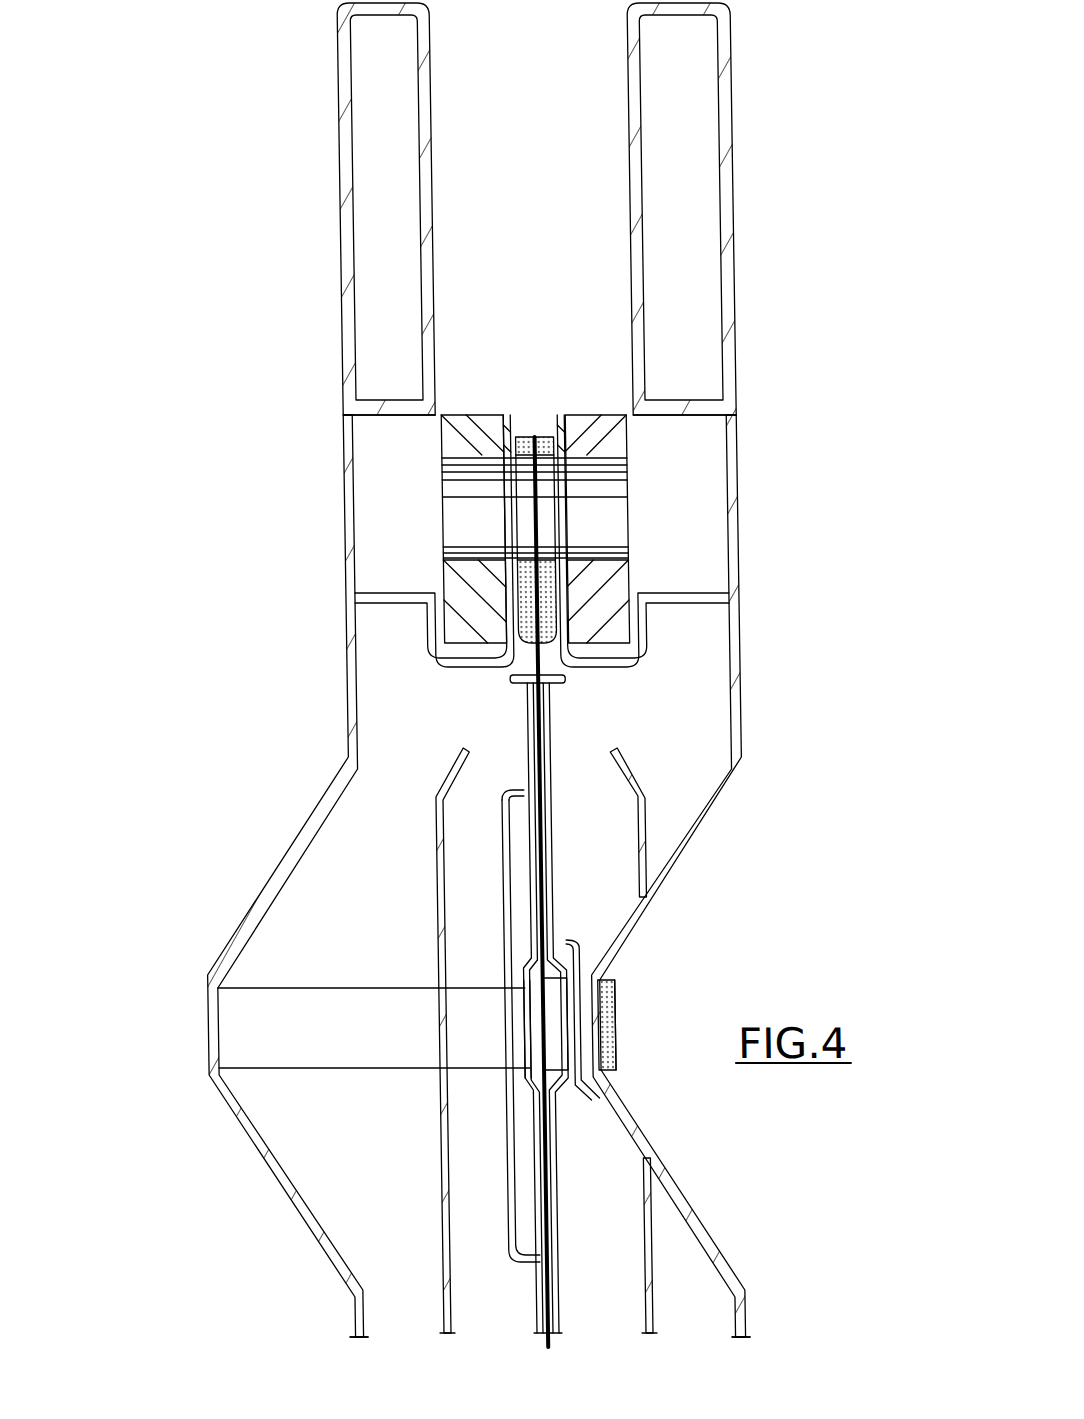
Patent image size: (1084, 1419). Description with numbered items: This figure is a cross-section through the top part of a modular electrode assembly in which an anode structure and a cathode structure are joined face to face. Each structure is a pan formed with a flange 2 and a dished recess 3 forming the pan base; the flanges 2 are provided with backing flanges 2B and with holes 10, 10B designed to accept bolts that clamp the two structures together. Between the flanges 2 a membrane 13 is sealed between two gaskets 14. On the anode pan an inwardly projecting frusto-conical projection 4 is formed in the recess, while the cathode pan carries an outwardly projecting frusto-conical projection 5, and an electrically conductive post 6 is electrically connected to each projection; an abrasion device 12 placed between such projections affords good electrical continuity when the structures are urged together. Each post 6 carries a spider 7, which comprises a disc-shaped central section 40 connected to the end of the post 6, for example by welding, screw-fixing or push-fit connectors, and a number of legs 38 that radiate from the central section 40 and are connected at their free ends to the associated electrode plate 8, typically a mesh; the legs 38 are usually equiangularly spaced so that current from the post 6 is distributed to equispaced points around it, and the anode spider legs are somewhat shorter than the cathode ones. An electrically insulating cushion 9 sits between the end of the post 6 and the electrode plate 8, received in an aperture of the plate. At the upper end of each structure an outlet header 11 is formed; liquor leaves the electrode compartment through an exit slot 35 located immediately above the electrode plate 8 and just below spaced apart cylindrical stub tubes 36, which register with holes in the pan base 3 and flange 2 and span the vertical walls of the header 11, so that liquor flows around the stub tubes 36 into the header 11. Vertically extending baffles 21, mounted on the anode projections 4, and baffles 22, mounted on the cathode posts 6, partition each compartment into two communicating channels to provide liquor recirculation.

The flange 2 is at (494, 420).
The backing flange 2B is at (446, 580).
The dished recess 3 is at (335, 1318).
The inwardly projecting frusto-conical projection 4 is at (655, 872).
The outwardly projecting frusto-conical projection 5 is at (249, 888).
The electrically conductive post 6 is at (335, 1000).
The spider 7 is at (572, 1100).
The electrode plate 8 is at (519, 710).
The electrically insulating cushion 9 is at (530, 1010).
The hole 10 is at (477, 530).
The hole 10B is at (452, 550).
The outlet header 11 is at (363, 336).
The abrasion device 12 is at (603, 1003).
The membrane 13 is at (517, 665).
The gasket 14 is at (518, 440).
The baffle 21 is at (633, 795).
The baffle 22 is at (422, 1165).
The exit slot 35 is at (376, 625).
The cylindrical stub tube 36 is at (372, 400).
The leg 38 is at (492, 857).
The disc-shaped central section 40 is at (515, 1010).